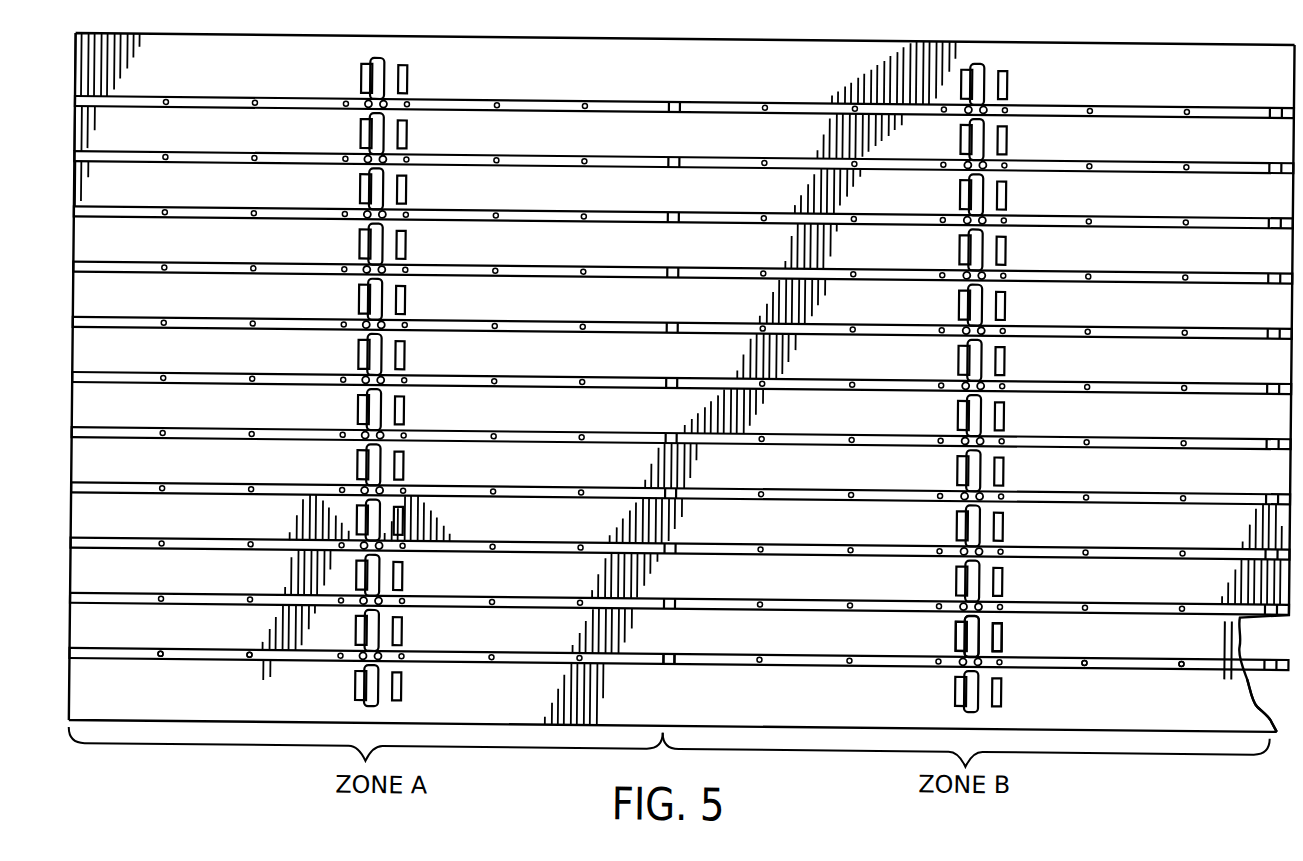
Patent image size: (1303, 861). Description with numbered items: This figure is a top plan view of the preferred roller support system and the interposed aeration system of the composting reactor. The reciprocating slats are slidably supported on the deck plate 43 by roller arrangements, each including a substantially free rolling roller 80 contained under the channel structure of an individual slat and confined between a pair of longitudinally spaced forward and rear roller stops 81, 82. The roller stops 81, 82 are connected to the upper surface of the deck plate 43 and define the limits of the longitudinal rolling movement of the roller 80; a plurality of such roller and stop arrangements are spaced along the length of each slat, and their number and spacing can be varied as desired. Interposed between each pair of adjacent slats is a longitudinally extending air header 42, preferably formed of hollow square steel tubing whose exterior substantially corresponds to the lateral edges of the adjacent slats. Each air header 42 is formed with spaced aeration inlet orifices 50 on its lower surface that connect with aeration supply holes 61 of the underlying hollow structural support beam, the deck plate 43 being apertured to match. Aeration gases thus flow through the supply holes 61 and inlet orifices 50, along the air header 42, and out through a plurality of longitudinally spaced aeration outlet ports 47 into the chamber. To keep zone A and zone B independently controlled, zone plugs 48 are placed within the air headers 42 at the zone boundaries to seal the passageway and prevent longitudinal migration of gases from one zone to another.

The air header 42 is at (1261, 649).
The deck plate 43 is at (1226, 688).
The aeration outlet ports 47 is at (168, 659).
The zone plugs 48 is at (673, 659).
The aeration inlet orifices 50 is at (962, 632).
The aeration supply holes 61 is at (962, 632).
The roller 80 is at (381, 688).
The forward roller stop 81 is at (364, 680).
The rear roller stop 82 is at (406, 684).